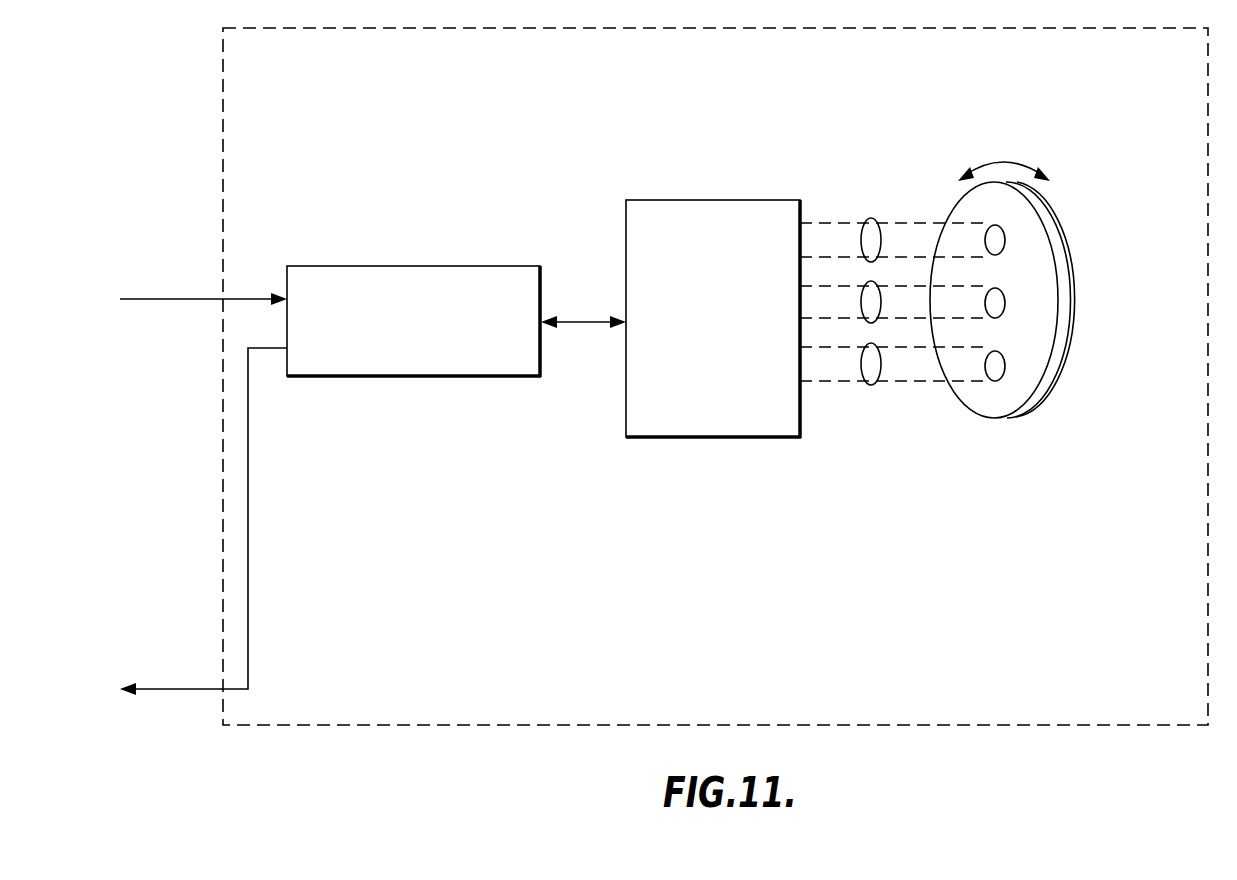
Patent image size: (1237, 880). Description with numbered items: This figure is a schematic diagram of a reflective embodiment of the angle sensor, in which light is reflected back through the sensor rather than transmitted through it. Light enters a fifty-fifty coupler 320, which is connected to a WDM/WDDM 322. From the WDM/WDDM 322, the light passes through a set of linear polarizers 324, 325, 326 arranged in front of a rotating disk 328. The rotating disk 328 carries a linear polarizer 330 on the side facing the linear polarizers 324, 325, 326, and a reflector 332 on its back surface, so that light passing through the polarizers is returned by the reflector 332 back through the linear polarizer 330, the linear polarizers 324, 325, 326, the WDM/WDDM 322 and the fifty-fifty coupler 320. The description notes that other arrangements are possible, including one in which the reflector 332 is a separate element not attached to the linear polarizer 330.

The 50/50 coupler 320 is at (415, 378).
The WDM/WDDM 322 is at (715, 439).
The linear polarizer 324 is at (868, 226).
The linear polarizer 325 is at (877, 300).
The linear polarizer 326 is at (874, 385).
The rotating disk 328 is at (1041, 324).
The linear polarizer 330 is at (973, 392).
The reflector 332 is at (1074, 362).